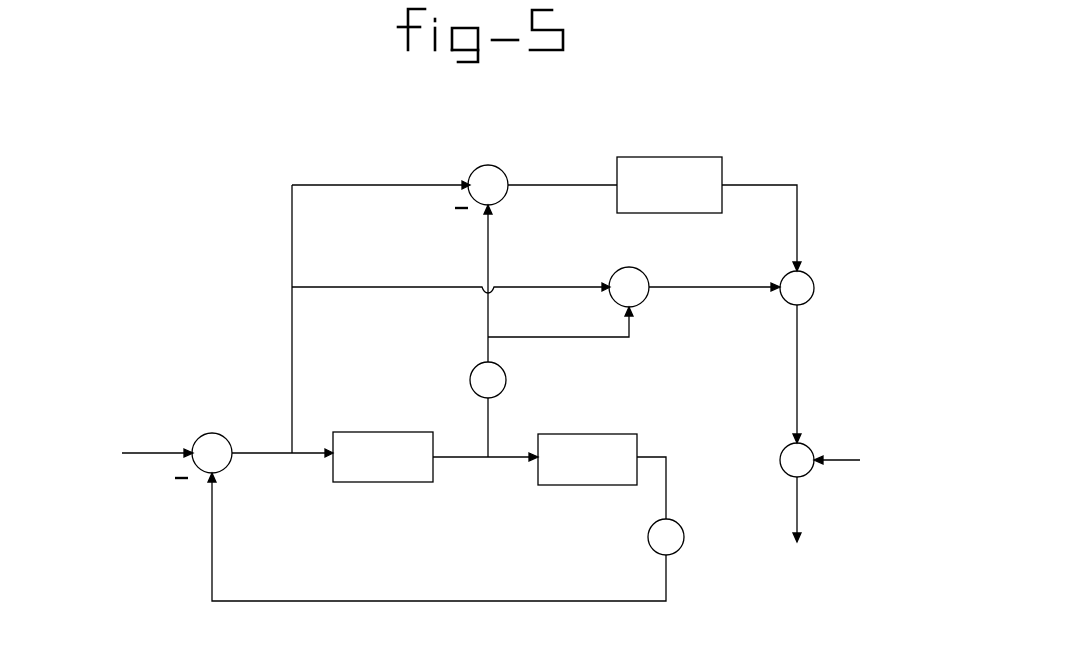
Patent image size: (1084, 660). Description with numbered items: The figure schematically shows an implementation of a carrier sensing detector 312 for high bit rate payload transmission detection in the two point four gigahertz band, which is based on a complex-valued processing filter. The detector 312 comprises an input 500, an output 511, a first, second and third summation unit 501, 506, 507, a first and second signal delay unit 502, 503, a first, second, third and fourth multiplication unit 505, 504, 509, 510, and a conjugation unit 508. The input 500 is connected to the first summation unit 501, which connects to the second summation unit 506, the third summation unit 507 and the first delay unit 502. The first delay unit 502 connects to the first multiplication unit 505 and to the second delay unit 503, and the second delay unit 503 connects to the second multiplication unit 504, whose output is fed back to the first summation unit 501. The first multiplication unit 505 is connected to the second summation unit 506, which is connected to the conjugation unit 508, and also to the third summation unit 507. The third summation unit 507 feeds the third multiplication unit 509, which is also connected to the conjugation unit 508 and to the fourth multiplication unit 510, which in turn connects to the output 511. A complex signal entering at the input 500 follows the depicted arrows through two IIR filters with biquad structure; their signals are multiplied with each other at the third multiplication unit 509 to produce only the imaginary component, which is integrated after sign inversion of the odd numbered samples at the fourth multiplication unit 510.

The carrier sensing detector 312 is at (258, 182).
The input 500 is at (127, 471).
The first summation unit 501 is at (197, 440).
The first delay unit 502 is at (418, 452).
The second delay unit 503 is at (558, 448).
The second multiplication unit 504 is at (650, 531).
The first multiplication unit 505 is at (476, 366).
The second summation unit 506 is at (478, 172).
The third summation unit 507 is at (641, 280).
The conjugation unit 508 is at (668, 166).
The third multiplication unit 509 is at (806, 276).
The fourth multiplication unit 510 is at (853, 473).
The output 511 is at (818, 541).